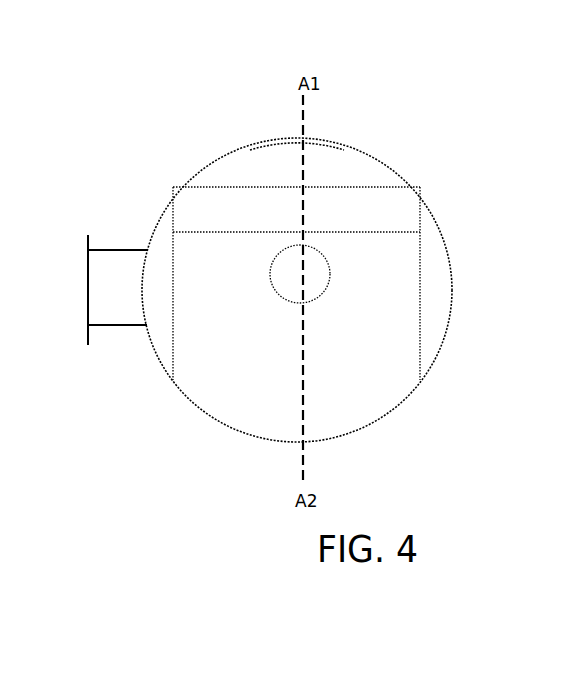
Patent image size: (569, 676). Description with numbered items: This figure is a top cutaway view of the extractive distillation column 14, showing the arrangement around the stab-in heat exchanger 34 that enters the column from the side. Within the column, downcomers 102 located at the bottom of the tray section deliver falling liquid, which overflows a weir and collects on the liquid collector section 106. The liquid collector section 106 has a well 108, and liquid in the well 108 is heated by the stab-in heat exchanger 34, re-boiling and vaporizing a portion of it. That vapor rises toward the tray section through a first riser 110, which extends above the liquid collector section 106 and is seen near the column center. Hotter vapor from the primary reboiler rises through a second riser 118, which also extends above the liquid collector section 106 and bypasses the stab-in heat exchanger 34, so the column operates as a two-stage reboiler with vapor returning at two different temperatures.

The extractive distillation column 14 is at (167, 211).
The stab-in heat exchanger 34 is at (127, 278).
The downcomers 102 is at (166, 346).
The liquid collector section 106 is at (350, 320).
The well 108 is at (213, 210).
The first riser 110 is at (302, 258).
The second riser 118 is at (298, 157).